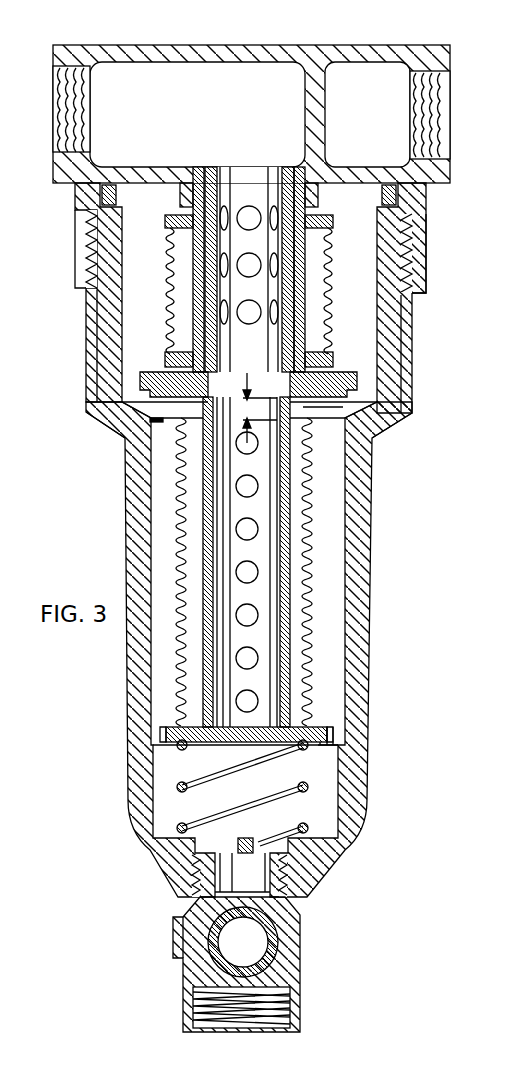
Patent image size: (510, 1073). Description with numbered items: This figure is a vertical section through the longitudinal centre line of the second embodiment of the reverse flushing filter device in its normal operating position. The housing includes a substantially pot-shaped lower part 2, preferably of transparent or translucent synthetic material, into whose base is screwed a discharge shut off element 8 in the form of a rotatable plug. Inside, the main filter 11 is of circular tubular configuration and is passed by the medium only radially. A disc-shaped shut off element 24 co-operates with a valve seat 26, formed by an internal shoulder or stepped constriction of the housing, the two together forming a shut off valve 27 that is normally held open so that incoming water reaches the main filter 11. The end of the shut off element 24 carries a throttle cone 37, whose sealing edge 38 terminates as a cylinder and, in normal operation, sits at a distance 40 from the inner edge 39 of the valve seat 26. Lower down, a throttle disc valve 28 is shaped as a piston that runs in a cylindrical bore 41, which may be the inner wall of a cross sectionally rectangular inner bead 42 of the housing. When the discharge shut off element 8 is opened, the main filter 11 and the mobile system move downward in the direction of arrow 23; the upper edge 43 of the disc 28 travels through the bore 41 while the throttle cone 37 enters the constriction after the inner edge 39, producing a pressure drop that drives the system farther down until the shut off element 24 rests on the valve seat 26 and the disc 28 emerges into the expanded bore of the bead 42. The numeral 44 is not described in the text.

The lower part 2 is at (135, 508).
The discharge shut off element 8 is at (283, 947).
The main filter 11 is at (307, 564).
The arrow 23 is at (235, 92).
The shut off element 24 is at (340, 373).
The valve seat 26 is at (127, 408).
The shut off valve 27 is at (130, 379).
The throttle disc valve 28 is at (247, 740).
The throttle cone 37 is at (147, 392).
The sealing edge 38 is at (347, 402).
The inner edge 39 is at (177, 572).
The distance 40 is at (247, 413).
The cylindrical bore 41 is at (320, 748).
The inner bead 42 is at (152, 732).
The upper edge 43 is at (324, 725).
The spring end 44 is at (160, 771).